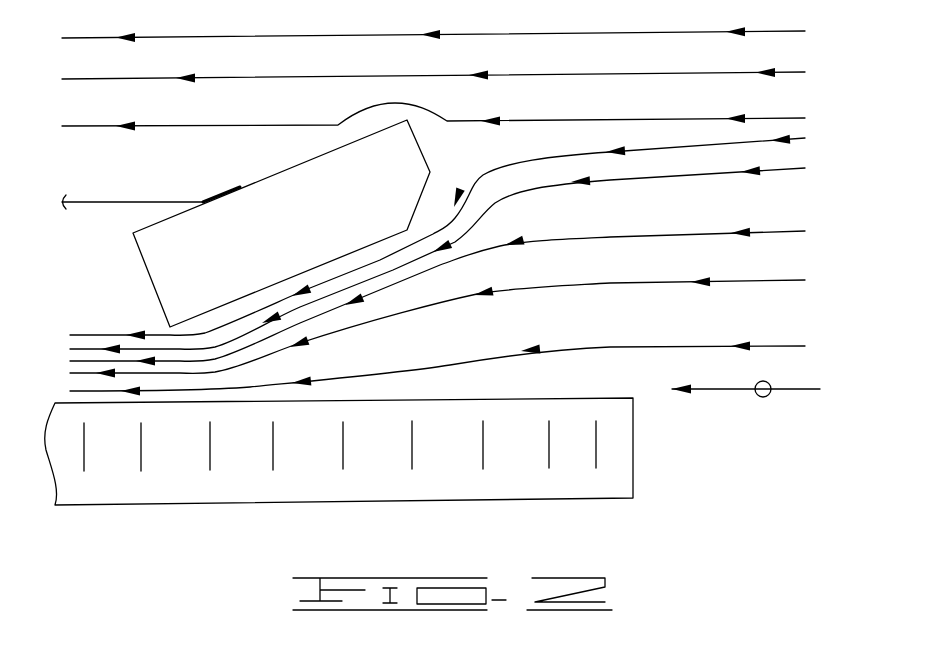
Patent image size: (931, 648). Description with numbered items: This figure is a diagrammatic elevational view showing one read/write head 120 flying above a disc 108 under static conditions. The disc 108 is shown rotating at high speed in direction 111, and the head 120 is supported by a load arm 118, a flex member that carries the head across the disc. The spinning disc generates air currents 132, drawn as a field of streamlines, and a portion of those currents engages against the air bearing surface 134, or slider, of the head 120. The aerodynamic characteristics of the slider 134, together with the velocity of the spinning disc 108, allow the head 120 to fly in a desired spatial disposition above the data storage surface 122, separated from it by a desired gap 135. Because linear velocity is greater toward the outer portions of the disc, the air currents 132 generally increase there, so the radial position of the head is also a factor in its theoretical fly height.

The disc 108 is at (633, 470).
The direction of rotation 111 is at (757, 396).
The load arm 118 is at (115, 200).
The read/write head 120 is at (142, 257).
The data storage surface 122 is at (508, 398).
The air currents 132 is at (810, 3).
The air bearing surface 134 is at (367, 247).
The gap 135 is at (138, 319).